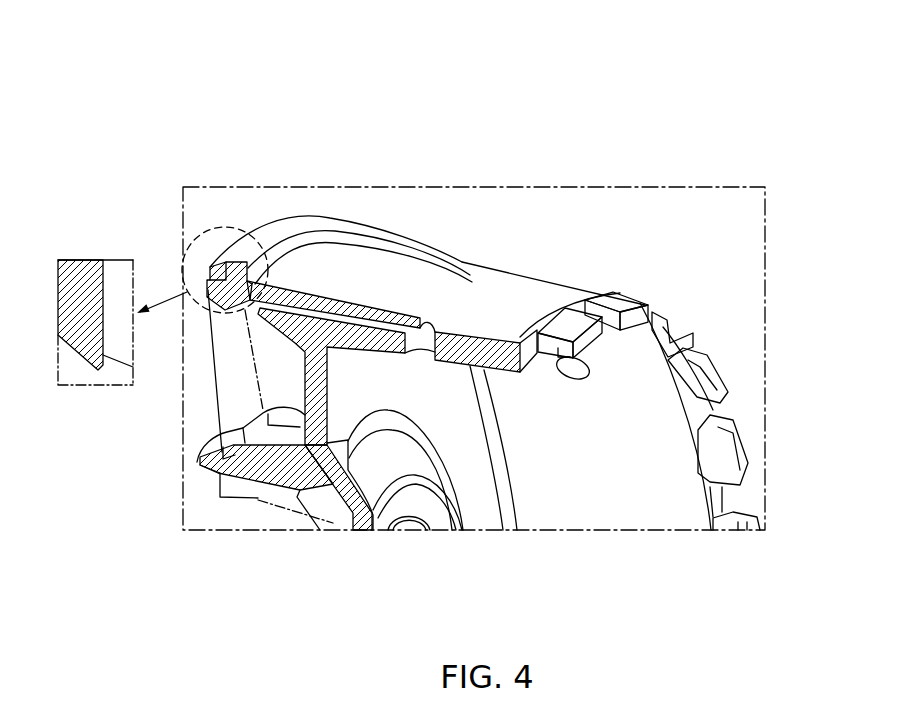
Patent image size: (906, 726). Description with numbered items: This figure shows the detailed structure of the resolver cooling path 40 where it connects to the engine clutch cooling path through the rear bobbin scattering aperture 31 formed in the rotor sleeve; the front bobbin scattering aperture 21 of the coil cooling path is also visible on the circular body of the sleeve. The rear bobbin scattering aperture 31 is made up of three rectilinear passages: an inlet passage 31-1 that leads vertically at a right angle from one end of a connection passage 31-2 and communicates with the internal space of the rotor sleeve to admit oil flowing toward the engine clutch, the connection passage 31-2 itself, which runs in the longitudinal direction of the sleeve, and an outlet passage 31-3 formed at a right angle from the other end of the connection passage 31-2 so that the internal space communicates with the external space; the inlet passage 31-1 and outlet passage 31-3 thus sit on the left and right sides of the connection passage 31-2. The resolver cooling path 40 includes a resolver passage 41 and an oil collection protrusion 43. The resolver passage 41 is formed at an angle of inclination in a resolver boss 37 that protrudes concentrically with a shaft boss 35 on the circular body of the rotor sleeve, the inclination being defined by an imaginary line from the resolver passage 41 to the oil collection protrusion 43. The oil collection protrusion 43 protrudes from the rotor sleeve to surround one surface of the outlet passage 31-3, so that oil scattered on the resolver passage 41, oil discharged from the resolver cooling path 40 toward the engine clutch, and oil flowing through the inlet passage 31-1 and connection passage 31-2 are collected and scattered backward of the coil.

The front bobbin scattering aperture 21 is at (502, 343).
The rear bobbin scattering aperture 31 is at (425, 123).
The inlet passage 31-1 is at (405, 340).
The connection passage 31-2 is at (320, 300).
The outlet passage 31-3 is at (238, 283).
The shaft boss 35 is at (397, 517).
The resolver boss 37 is at (272, 470).
The resolver cooling path 40 is at (215, 402).
The resolver passage 41 is at (305, 468).
The oil collection protrusion 43 is at (98, 377).